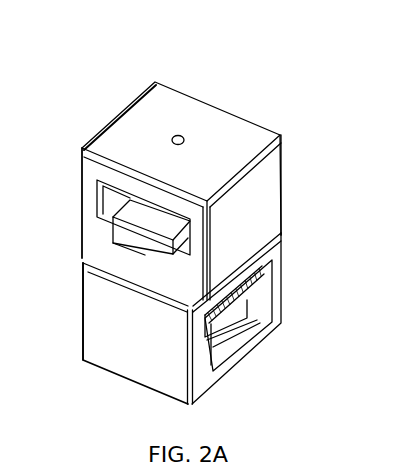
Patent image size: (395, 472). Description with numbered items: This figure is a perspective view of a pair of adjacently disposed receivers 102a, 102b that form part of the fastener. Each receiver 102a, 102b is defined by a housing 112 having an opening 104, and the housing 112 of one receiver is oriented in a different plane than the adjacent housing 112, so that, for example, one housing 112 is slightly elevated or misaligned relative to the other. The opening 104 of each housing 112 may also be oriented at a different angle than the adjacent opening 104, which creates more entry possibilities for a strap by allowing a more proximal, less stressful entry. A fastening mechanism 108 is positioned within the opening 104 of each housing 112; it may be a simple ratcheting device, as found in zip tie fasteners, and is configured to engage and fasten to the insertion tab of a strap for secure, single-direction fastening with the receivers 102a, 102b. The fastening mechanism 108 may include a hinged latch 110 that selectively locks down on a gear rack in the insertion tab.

The receiver 102a is at (133, 70).
The receiver 102b is at (93, 380).
The opening 104 is at (103, 198).
The fastening mechanism 108 is at (167, 215).
The hinged latch 110 is at (137, 233).
The housing 112 is at (280, 135).